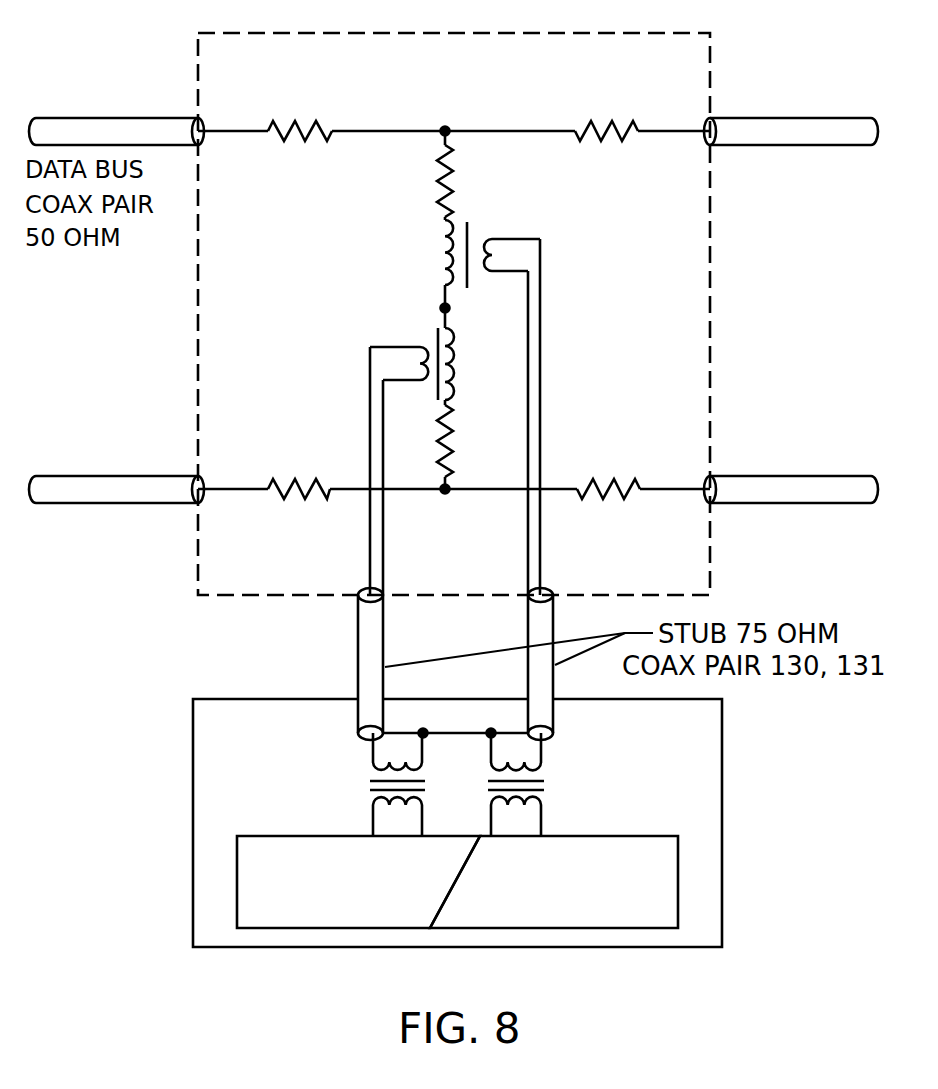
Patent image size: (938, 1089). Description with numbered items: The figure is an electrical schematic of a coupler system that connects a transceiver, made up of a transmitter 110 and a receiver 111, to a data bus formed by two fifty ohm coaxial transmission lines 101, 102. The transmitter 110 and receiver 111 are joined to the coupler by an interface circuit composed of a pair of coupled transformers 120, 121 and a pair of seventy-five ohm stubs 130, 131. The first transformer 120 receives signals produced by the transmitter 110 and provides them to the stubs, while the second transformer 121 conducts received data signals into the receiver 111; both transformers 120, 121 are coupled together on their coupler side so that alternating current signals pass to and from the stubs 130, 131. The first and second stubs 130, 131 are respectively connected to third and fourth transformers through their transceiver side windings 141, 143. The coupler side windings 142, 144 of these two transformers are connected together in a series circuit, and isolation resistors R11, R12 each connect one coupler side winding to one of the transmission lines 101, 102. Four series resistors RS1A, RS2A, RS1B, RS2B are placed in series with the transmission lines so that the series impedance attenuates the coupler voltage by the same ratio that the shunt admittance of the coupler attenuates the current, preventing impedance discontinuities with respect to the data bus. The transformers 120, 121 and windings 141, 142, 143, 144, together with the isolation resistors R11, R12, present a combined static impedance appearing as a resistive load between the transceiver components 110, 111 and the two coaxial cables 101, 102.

The transmission line 101 is at (72, 118).
The transmission line 102 is at (74, 476).
The series resistor RS1A is at (328, 120).
The series resistor RS2A is at (590, 122).
The series resistor RS1B is at (328, 479).
The series resistor RS2B is at (590, 480).
The isolation resistor R11 is at (438, 180).
The isolation resistor R12 is at (454, 440).
The transceiver side winding 141 is at (377, 347).
The coupler side winding 142 is at (458, 367).
The transceiver side winding 143 is at (490, 240).
The coupler side winding 144 is at (441, 250).
The stub 130 is at (358, 708).
The stub 131 is at (555, 711).
The first transformer 120 is at (370, 781).
The second transformer 121 is at (544, 782).
The transmitter 110 is at (358, 882).
The receiver 111 is at (554, 882).